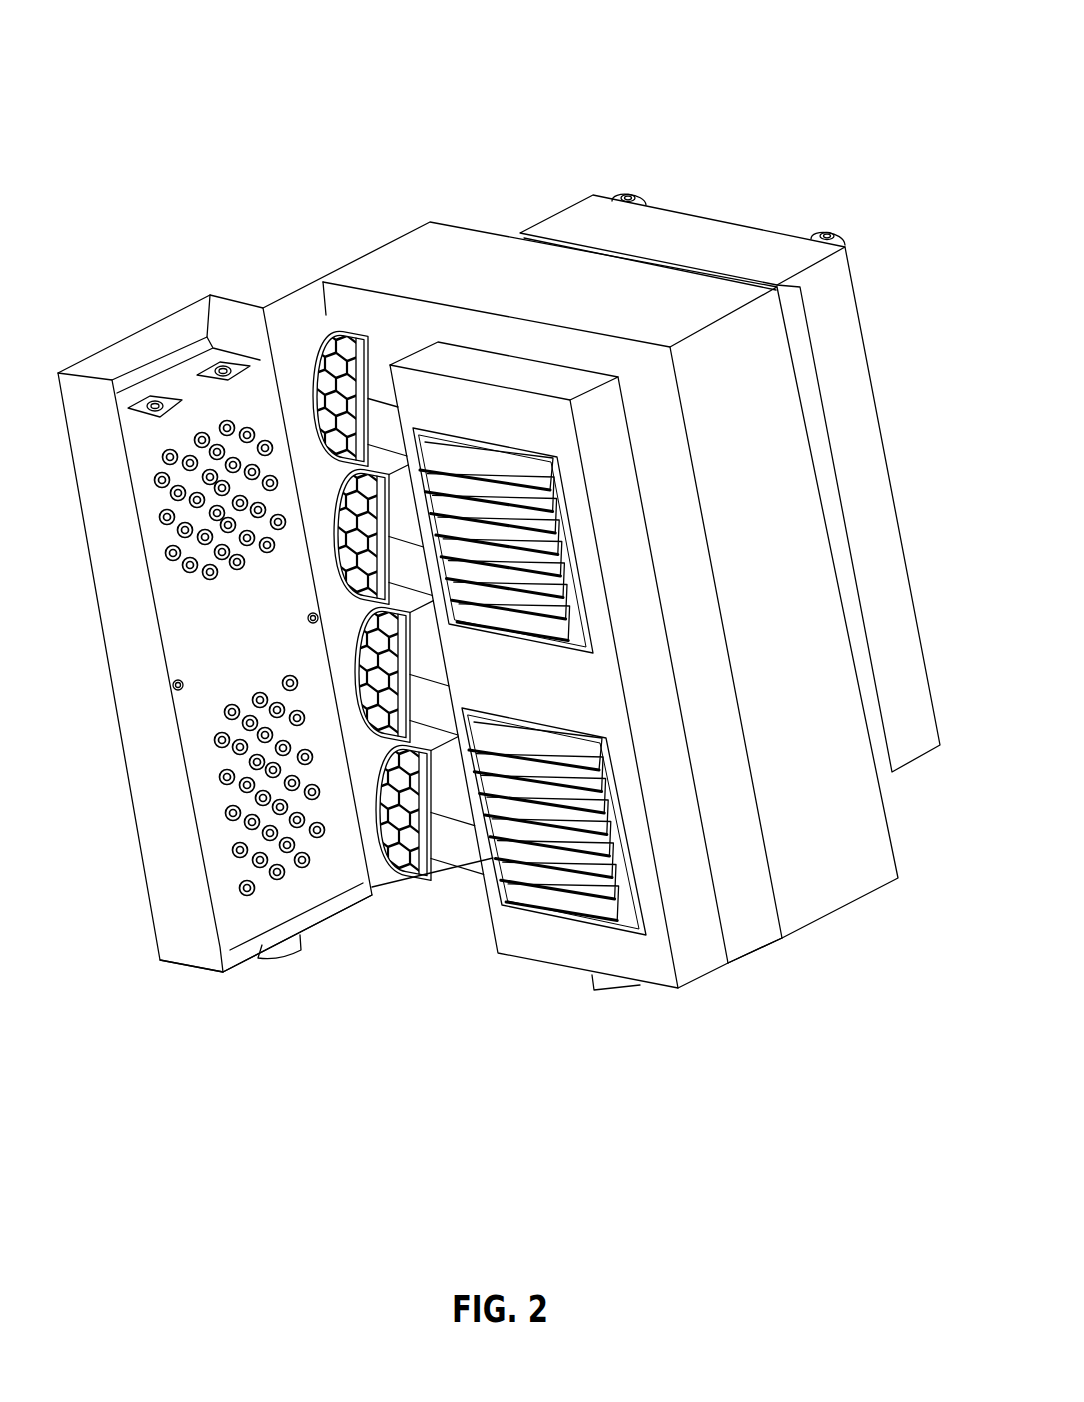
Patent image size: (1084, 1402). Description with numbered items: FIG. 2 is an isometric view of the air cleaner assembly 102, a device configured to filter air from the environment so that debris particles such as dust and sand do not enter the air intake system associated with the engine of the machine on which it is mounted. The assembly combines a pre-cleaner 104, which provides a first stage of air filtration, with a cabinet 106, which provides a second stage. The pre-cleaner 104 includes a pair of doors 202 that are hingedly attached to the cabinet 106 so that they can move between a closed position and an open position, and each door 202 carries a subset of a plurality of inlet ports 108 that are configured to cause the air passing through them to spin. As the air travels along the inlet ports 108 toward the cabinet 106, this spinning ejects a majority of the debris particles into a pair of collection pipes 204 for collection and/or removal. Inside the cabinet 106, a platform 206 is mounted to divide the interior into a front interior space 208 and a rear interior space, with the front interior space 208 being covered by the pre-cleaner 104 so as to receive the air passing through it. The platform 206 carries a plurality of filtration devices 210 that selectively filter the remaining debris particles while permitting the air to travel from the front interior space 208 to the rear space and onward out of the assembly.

The air cleaner assembly 102 is at (160, 33).
The pre-cleaner 104 is at (130, 336).
The cabinet 106 is at (368, 254).
The inlet ports 108 is at (210, 580).
The doors 202 is at (155, 923).
The collection pipes 204 is at (286, 960).
The platform 206 is at (354, 457).
The front interior space 208 is at (427, 888).
The filtration devices 210 is at (322, 340).